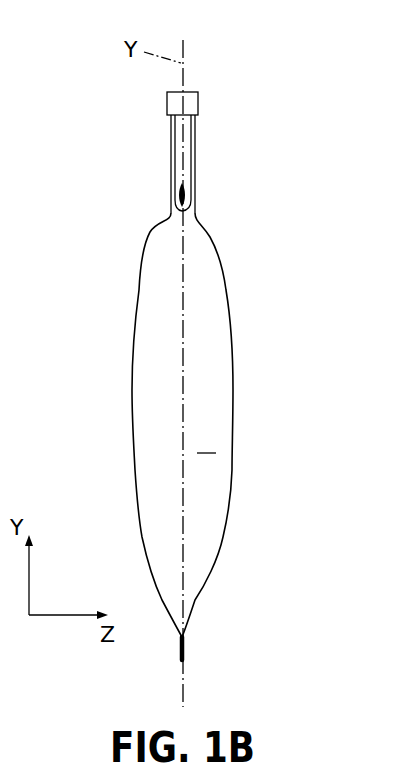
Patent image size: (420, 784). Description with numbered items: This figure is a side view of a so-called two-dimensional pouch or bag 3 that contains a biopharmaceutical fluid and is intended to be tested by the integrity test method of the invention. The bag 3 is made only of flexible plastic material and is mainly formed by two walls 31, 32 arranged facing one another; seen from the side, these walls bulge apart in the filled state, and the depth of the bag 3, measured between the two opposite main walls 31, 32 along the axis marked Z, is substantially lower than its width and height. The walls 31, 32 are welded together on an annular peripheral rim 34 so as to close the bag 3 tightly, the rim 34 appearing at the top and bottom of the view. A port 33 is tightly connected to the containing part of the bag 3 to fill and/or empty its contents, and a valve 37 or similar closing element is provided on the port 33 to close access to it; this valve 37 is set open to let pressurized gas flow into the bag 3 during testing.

The bag 3 is at (182, 382).
The wall 31 is at (133, 355).
The wall 32 is at (235, 387).
The port 33 is at (170, 145).
The peripheral welding rim 34 is at (181, 196).
The valve 37 is at (200, 102).